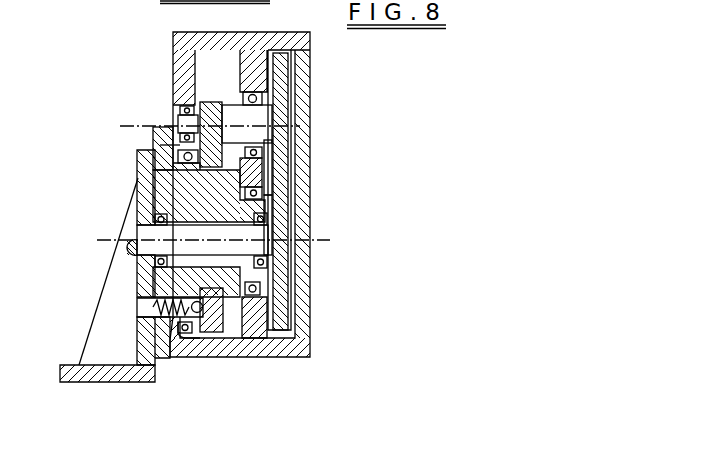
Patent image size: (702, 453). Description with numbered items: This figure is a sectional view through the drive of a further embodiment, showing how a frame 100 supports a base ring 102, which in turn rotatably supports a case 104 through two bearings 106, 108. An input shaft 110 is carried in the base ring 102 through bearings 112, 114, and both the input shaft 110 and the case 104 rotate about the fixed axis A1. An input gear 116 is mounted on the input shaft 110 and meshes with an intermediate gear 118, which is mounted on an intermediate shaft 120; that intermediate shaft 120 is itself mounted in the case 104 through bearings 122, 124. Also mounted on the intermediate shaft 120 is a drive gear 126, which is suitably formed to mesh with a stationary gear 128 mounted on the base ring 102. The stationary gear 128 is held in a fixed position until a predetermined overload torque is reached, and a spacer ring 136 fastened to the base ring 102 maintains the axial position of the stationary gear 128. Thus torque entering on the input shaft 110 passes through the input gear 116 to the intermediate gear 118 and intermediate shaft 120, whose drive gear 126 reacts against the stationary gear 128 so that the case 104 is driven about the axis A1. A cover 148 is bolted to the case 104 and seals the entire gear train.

The frame 100 is at (62, 365).
The base ring 102 is at (140, 330).
The case 104 is at (250, 357).
The bearing 106 is at (187, 333).
The bearing 108 is at (262, 290).
The input shaft 110 is at (137, 232).
The bearing 112 is at (137, 269).
The bearing 114 is at (265, 270).
The input gear 116 is at (296, 258).
The intermediate gear 118 is at (291, 168).
The intermediate shaft 120 is at (262, 116).
The bearing 122 is at (293, 150).
The bearing 124 is at (185, 115).
The drive gear 126 is at (210, 103).
The stationary gear 128 is at (153, 165).
The spacer ring 136 is at (228, 320).
The cover 148 is at (290, 66).
The fixed axis A1 is at (320, 240).